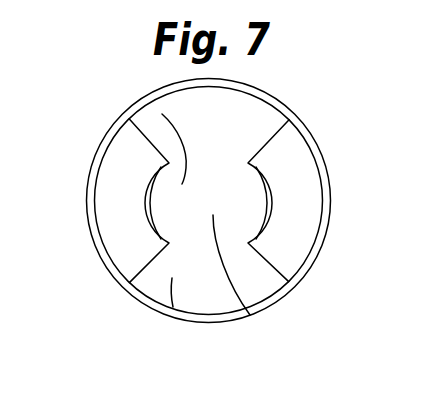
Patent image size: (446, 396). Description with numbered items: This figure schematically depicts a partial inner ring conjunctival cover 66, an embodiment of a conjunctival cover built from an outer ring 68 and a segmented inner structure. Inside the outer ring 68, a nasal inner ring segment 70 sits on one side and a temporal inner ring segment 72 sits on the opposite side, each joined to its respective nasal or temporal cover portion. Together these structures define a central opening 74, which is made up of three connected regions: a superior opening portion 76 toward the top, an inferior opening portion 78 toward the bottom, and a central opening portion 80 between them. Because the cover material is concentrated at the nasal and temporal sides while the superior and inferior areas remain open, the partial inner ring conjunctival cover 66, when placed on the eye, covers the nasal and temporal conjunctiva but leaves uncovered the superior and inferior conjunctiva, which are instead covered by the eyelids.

The partial inner ring conjunctival cover 66 is at (298, 106).
The outer ring 68 is at (317, 142).
The nasal inner ring segment 70 is at (145, 214).
The temporal inner ring segment 72 is at (273, 202).
The central opening 74 is at (250, 315).
The superior opening portion 76 is at (228, 104).
The inferior opening portion 78 is at (173, 307).
The central opening portion 80 is at (162, 114).